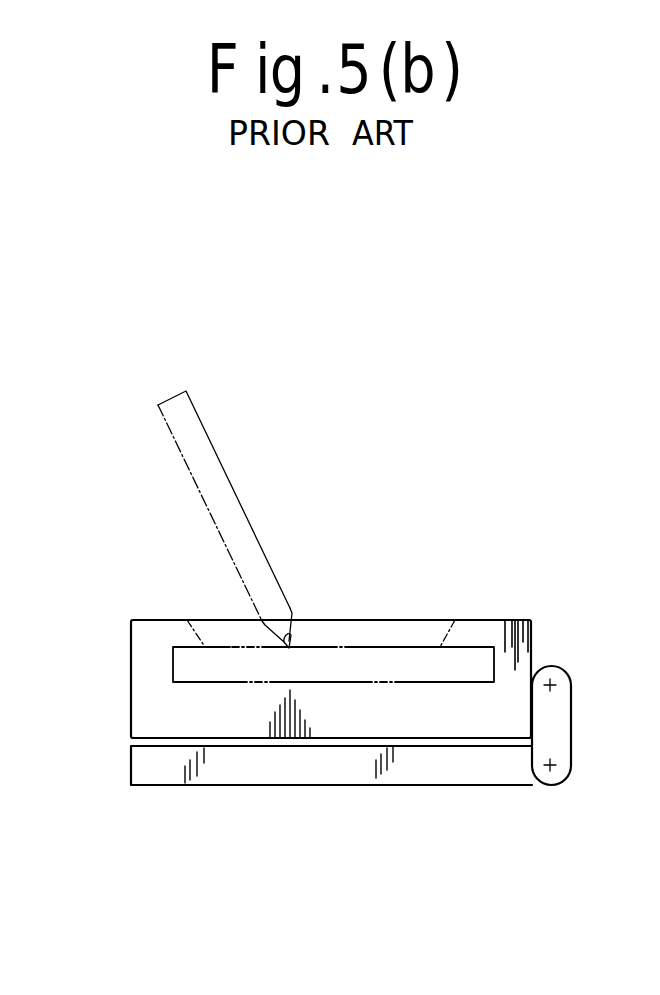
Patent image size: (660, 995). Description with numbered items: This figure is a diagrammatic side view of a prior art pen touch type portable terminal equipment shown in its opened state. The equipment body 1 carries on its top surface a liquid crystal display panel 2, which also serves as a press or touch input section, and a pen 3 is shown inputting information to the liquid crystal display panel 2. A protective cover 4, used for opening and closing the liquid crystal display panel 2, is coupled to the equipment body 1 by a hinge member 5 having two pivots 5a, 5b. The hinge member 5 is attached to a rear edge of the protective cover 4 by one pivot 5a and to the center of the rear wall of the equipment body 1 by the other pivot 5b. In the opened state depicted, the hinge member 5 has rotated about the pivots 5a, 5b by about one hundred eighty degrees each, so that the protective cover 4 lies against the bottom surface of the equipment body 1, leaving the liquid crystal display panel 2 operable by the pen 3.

The equipment body 1 is at (143, 715).
The liquid crystal display panel 2 is at (345, 647).
The pen 3 is at (228, 497).
The protective cover 4 is at (413, 770).
The hinge member 5 is at (576, 727).
The pivot 5a is at (552, 668).
The pivot 5b is at (565, 780).